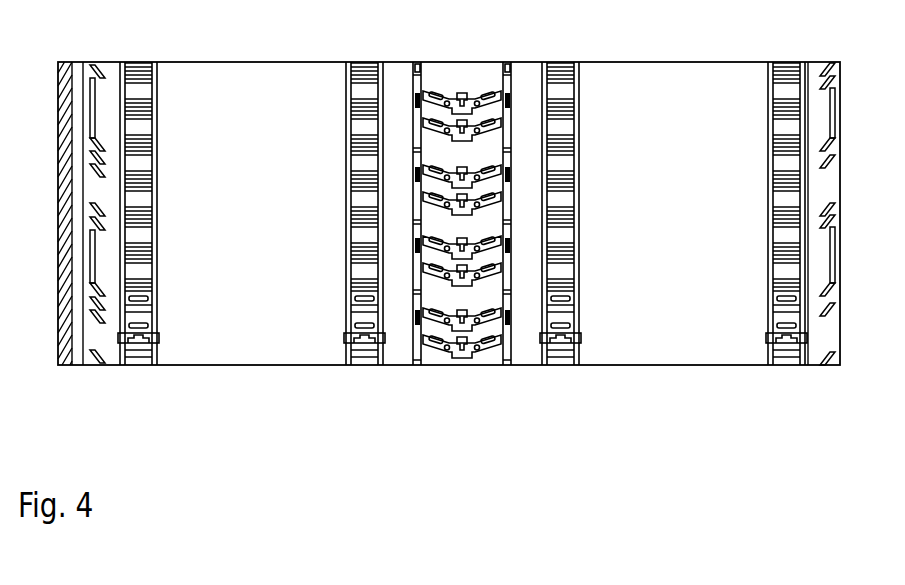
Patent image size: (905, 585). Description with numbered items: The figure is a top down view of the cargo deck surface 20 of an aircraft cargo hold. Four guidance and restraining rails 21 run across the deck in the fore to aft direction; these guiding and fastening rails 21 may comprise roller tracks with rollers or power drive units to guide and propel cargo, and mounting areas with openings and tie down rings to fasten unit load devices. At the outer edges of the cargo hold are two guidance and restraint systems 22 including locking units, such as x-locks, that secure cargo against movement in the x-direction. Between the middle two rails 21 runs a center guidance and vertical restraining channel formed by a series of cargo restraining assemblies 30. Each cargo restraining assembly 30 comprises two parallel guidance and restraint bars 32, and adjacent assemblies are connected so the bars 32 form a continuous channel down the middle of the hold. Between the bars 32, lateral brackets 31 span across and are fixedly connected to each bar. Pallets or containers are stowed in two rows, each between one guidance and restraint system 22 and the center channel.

The cargo deck surface 20 is at (235, 400).
The guiding and fastening rail 21 is at (139, 350).
The guidance and restraint system 22 is at (103, 350).
The cargo restraining assembly 30 is at (467, 234).
The lateral bracket 31 is at (440, 98).
The guidance and restraint bar 32 is at (417, 68).